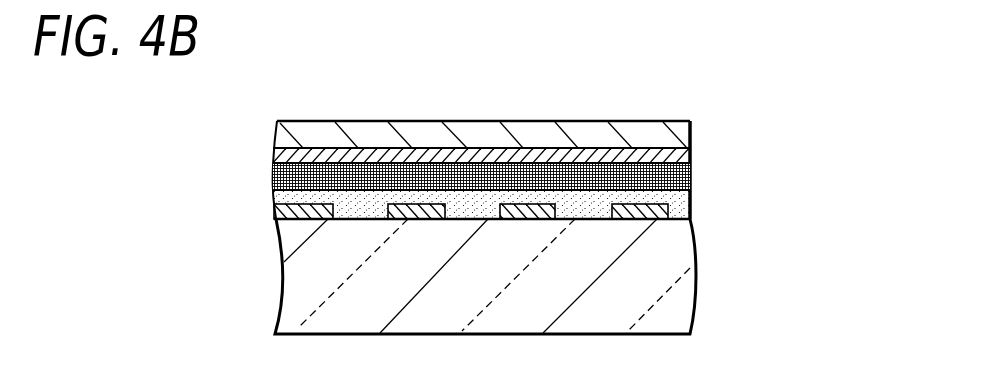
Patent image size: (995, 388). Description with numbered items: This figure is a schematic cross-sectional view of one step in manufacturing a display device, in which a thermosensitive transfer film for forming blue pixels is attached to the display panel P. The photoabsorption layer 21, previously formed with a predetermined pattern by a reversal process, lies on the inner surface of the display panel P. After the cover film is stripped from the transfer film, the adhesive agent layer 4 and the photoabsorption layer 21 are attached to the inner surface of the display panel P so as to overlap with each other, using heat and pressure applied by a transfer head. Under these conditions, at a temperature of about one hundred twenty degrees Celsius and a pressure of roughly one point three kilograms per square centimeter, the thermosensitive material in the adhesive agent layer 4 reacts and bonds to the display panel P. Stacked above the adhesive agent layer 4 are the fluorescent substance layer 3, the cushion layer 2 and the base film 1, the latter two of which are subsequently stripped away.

The base film 1 is at (692, 128).
The cushion layer 2 is at (690, 151).
The fluorescent substance layer 3 is at (690, 177).
The adhesive agent layer 4 is at (674, 211).
The photoabsorption layer 21 is at (309, 195).
The display panel P is at (670, 272).